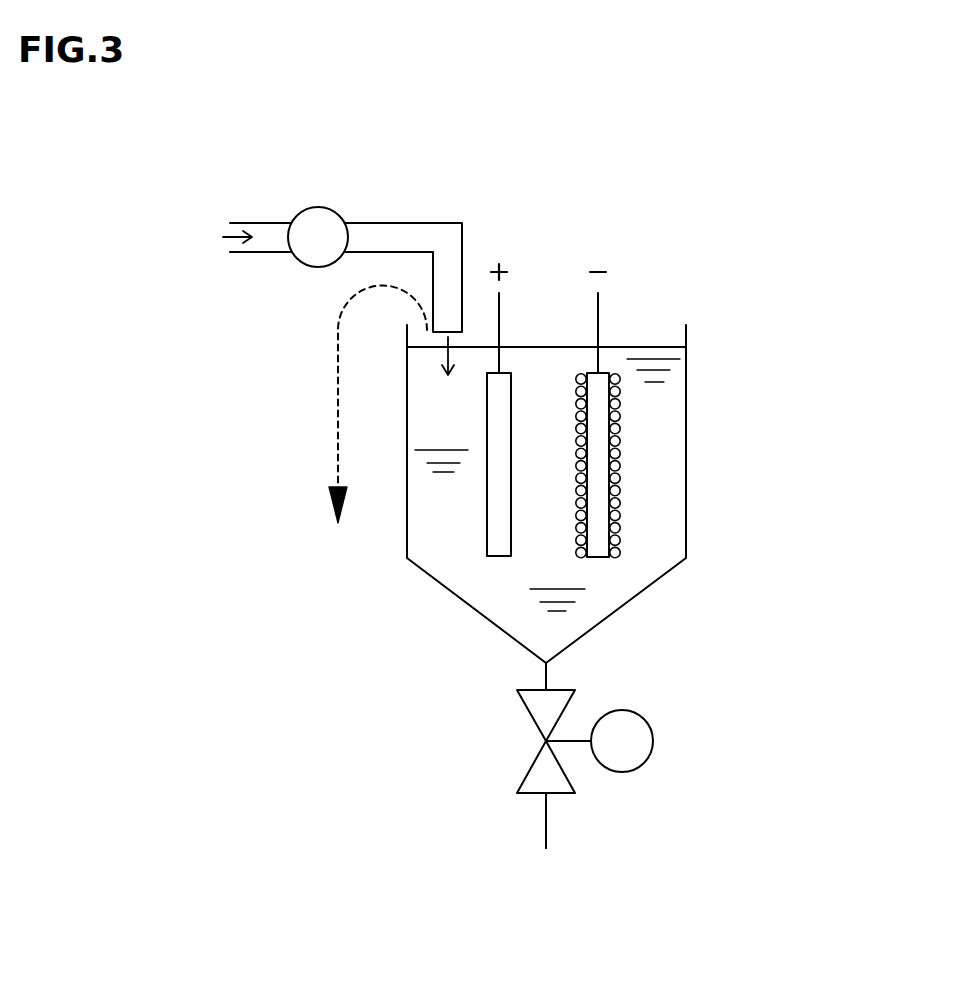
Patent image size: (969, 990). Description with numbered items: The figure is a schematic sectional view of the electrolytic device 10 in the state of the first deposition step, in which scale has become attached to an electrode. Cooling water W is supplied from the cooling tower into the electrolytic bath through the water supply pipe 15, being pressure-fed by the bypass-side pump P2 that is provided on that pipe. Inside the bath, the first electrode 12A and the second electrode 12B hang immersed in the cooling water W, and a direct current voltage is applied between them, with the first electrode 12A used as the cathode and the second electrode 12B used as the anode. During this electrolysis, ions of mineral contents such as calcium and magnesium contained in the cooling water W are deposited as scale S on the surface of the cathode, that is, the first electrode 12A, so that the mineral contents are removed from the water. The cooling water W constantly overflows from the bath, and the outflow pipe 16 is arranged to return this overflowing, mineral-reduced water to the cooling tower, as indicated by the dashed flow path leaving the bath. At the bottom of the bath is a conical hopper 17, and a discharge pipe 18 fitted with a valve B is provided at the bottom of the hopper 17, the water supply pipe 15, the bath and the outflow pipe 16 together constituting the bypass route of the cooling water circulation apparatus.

The electrolytic device 10 is at (759, 213).
The water supply pipe 15 is at (403, 223).
The bypass-side pump P2 is at (320, 206).
The conical hopper 17 is at (602, 625).
The cooling water W is at (663, 398).
The first electrode 12A is at (600, 437).
The second electrode 12B is at (500, 527).
The scale S is at (620, 500).
The outflow pipe 16 is at (338, 449).
The valve B is at (530, 718).
The discharge pipe 18 is at (546, 823).